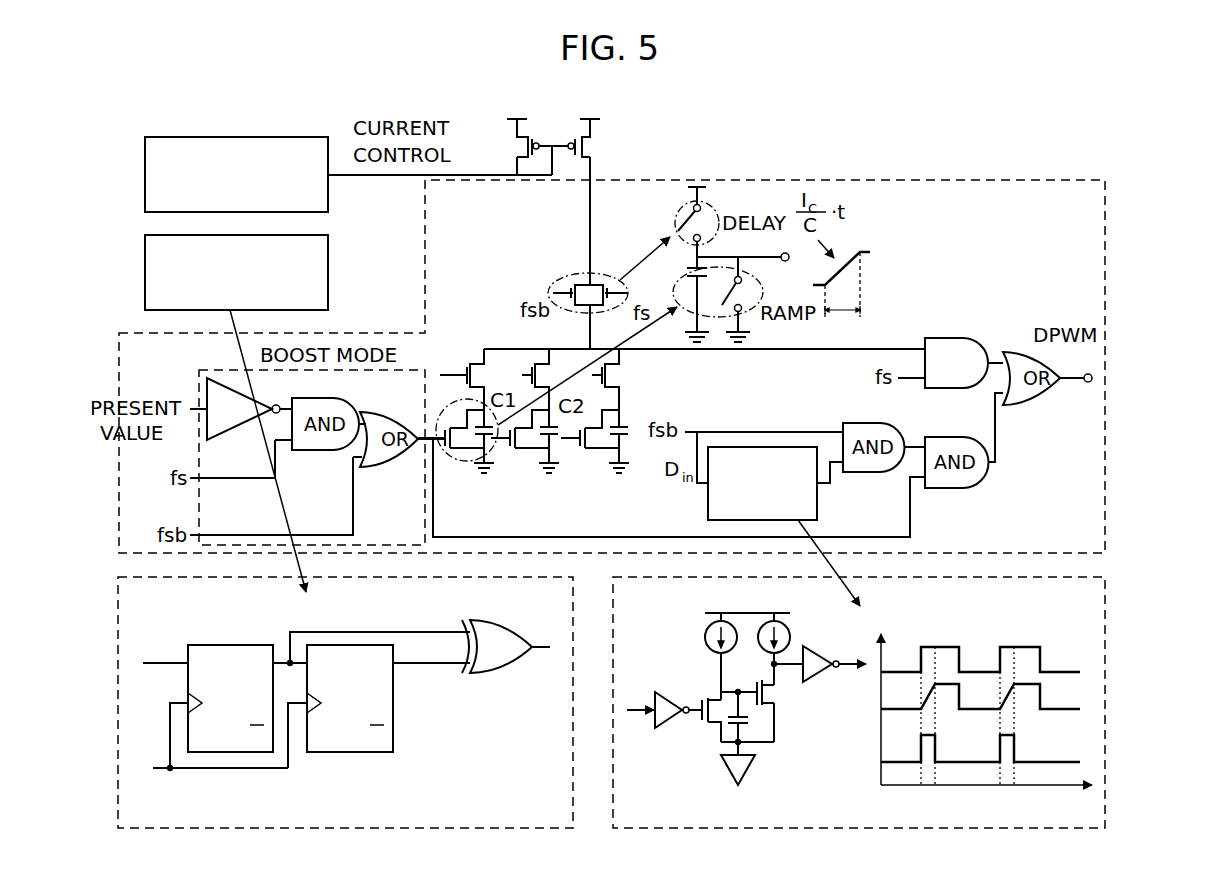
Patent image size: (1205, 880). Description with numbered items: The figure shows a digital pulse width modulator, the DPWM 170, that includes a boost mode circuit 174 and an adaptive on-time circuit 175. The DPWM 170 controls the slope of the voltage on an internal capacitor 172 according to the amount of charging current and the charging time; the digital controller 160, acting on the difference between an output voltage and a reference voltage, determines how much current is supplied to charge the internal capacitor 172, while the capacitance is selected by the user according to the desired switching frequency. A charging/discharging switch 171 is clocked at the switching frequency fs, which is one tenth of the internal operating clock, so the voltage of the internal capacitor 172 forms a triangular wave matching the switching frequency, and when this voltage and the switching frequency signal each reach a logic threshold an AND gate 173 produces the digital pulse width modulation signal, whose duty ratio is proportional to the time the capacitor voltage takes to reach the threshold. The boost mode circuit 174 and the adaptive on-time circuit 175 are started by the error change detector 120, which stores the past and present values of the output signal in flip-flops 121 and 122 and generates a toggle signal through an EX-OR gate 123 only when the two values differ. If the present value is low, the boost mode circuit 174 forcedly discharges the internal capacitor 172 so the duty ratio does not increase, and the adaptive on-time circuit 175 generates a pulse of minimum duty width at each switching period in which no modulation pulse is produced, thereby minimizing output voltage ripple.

The digital controller 160 is at (145, 175).
The error change detector 120 is at (145, 273).
The digital pulse width modulator (DPWM) 170 is at (372, 333).
The charging/discharging switch 171 is at (553, 287).
The internal capacitor 172 is at (620, 448).
The AND gate 173 is at (945, 338).
The boost mode circuit 174 is at (203, 385).
The adaptive on-time circuit 175 is at (817, 500).
The flip-flop 121 is at (230, 645).
The flip-flop 122 is at (347, 752).
The EX-OR gate 123 is at (508, 675).